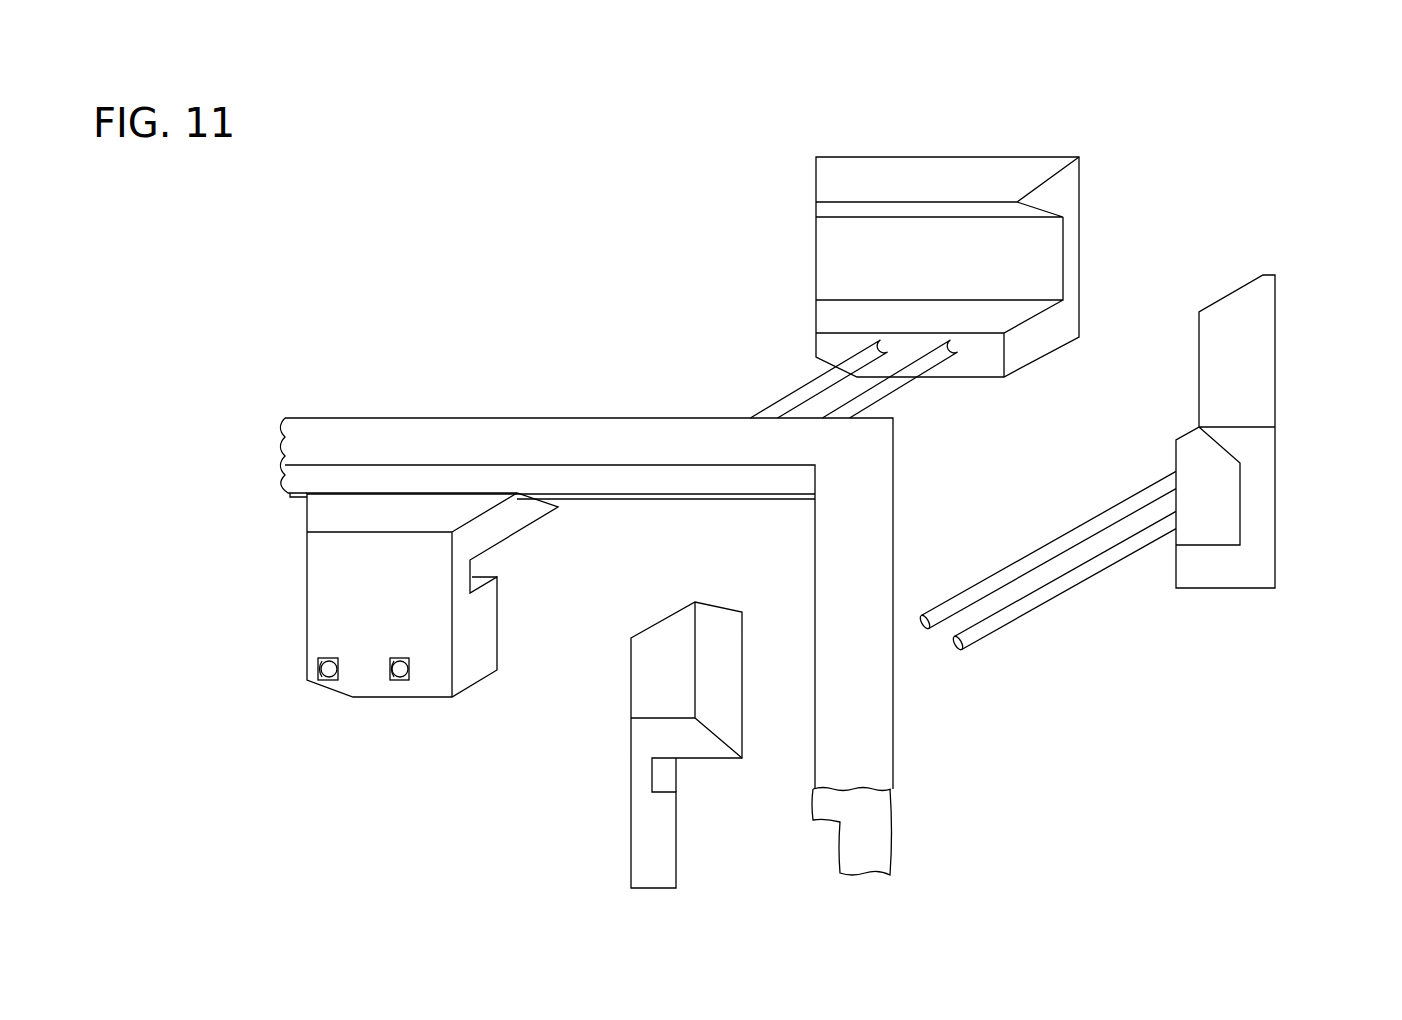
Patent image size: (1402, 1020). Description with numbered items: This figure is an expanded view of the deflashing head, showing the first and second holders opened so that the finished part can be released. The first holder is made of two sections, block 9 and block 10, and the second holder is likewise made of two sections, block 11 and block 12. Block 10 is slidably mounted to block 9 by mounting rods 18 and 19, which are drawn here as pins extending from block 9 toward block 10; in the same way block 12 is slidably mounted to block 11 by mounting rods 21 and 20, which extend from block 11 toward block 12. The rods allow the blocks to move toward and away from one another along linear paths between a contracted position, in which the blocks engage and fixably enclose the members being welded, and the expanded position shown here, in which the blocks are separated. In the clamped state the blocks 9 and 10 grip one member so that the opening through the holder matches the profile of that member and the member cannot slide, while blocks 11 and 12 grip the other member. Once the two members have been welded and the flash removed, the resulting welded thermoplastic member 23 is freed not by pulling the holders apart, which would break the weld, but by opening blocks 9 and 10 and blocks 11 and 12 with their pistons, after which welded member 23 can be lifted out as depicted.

The block 9 is at (1258, 357).
The block 10 is at (654, 668).
The block 11 is at (1007, 172).
The block 12 is at (327, 600).
The mounting rod 18 is at (1072, 528).
The mounting rod 19 is at (1088, 575).
The mounting rod 20 is at (900, 388).
The mounting rod 21 is at (793, 393).
The welded thermoplastic member 23 is at (869, 741).